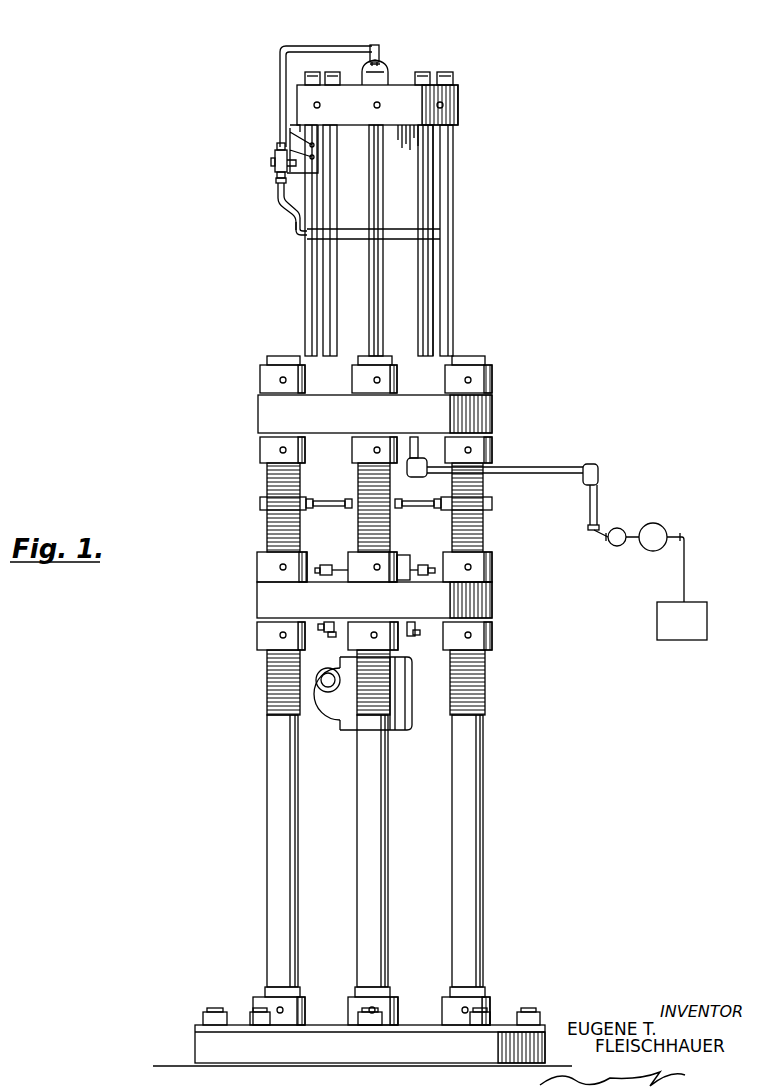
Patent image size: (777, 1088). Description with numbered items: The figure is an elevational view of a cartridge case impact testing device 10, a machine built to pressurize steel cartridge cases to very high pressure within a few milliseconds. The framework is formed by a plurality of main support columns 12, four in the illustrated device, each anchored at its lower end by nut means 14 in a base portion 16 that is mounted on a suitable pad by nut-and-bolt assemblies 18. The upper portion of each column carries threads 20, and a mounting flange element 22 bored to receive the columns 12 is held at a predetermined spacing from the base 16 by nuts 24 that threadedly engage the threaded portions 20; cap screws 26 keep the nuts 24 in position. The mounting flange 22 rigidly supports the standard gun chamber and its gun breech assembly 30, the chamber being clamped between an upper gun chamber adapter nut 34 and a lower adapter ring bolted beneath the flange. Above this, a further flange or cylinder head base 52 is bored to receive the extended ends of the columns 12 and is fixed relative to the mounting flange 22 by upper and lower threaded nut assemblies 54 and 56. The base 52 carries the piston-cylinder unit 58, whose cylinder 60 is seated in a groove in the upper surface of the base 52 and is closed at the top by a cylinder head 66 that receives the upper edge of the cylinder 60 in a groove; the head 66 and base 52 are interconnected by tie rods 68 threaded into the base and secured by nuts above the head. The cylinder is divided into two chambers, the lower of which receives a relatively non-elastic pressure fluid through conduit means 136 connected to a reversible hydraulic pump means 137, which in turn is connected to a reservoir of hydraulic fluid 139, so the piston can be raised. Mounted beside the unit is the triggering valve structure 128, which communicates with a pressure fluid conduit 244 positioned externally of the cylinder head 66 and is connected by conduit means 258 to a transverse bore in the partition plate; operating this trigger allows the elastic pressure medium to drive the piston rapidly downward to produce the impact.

The cartridge case impact testing device 10 is at (244, 499).
The main support columns 12 is at (280, 356).
The nut means 14 is at (262, 1010).
The base portion 16 is at (200, 1040).
The nut-and-bolt assemblies 18 is at (213, 1010).
The threads 20 is at (268, 697).
The mounting flange element 22 is at (265, 603).
The nuts 24 is at (493, 632).
The cap screws 26 is at (280, 566).
The gun breech assembly 30 is at (348, 720).
The upper gun chamber adapter nut 34 is at (345, 553).
The cylinder head base 52 is at (262, 412).
The upper threaded nut assemblies 54 is at (263, 372).
The lower threaded nut assemblies 56 is at (263, 448).
The piston-cylinder unit 58 is at (267, 227).
The cylinder 60 is at (362, 323).
The cylinder head 66 is at (458, 118).
The tie rods 68 is at (450, 234).
The triggering valve structure 128 is at (271, 148).
The conduit means 136 is at (533, 473).
The reversible hydraulic pump means 137 is at (655, 523).
The reservoir of hydraulic fluid 139 is at (707, 623).
The pressure fluid conduit 244 is at (345, 47).
The conduit means 258 is at (266, 209).